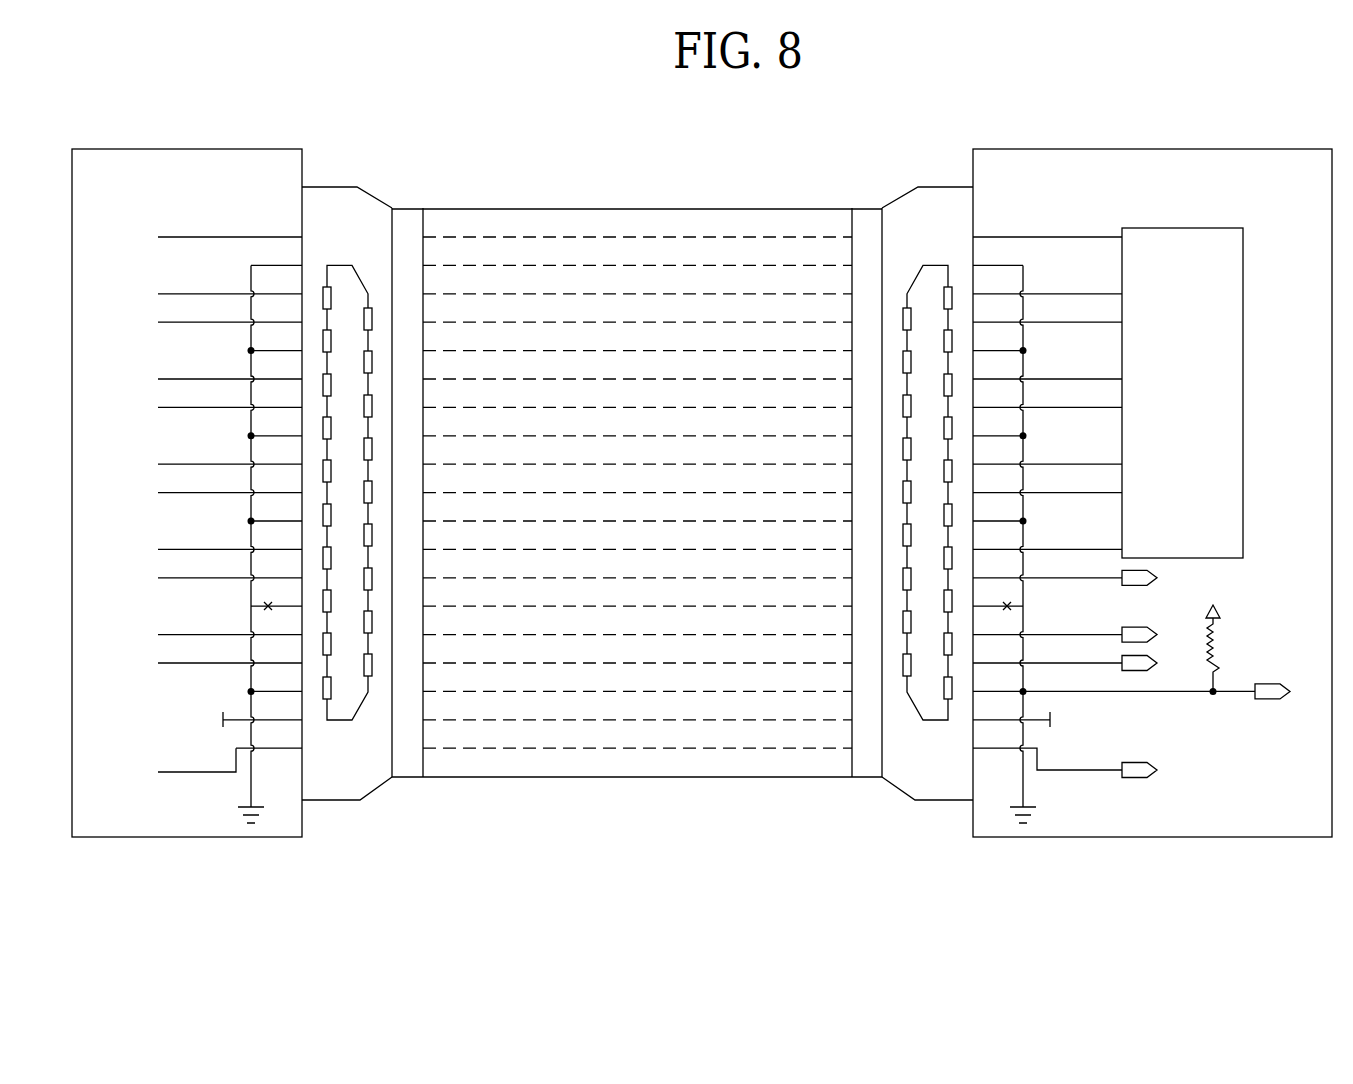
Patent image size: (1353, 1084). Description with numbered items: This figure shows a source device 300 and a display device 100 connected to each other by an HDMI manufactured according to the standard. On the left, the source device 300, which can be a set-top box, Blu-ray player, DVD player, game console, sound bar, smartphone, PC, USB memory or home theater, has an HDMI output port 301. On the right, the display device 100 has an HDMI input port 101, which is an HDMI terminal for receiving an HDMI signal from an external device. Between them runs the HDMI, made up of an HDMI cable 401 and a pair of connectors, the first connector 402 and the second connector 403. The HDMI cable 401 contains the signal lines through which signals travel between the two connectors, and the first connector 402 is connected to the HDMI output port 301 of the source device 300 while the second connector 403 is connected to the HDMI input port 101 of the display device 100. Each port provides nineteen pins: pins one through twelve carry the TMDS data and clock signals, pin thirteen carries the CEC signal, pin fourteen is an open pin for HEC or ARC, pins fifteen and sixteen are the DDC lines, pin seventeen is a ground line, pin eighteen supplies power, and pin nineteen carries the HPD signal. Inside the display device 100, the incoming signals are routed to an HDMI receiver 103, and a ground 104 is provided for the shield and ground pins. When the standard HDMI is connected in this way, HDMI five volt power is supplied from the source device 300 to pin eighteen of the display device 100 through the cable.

The source device 300 is at (186, 148).
The HDMI output port 301 is at (333, 187).
The HDMI cable 401 is at (548, 209).
The first connector 402 is at (412, 209).
The second connector 403 is at (864, 209).
The HDMI input port 101 is at (942, 187).
The display device 100 is at (1130, 149).
The HDMI receiver 103 is at (1187, 228).
The ground 104 is at (1024, 787).